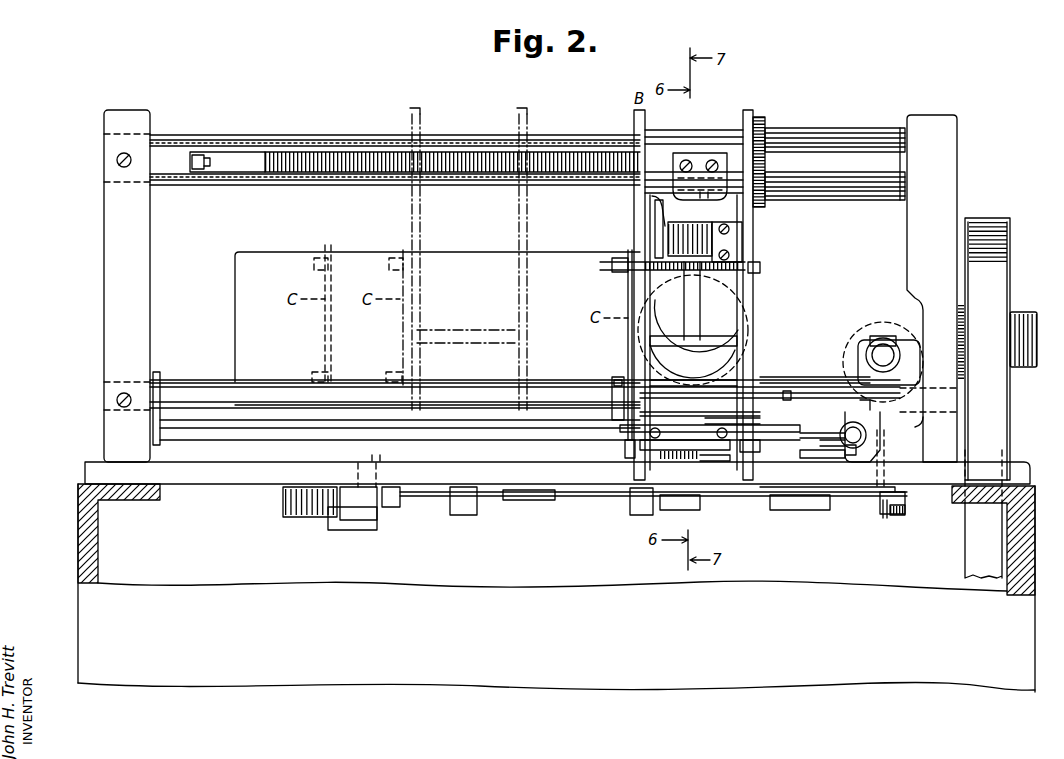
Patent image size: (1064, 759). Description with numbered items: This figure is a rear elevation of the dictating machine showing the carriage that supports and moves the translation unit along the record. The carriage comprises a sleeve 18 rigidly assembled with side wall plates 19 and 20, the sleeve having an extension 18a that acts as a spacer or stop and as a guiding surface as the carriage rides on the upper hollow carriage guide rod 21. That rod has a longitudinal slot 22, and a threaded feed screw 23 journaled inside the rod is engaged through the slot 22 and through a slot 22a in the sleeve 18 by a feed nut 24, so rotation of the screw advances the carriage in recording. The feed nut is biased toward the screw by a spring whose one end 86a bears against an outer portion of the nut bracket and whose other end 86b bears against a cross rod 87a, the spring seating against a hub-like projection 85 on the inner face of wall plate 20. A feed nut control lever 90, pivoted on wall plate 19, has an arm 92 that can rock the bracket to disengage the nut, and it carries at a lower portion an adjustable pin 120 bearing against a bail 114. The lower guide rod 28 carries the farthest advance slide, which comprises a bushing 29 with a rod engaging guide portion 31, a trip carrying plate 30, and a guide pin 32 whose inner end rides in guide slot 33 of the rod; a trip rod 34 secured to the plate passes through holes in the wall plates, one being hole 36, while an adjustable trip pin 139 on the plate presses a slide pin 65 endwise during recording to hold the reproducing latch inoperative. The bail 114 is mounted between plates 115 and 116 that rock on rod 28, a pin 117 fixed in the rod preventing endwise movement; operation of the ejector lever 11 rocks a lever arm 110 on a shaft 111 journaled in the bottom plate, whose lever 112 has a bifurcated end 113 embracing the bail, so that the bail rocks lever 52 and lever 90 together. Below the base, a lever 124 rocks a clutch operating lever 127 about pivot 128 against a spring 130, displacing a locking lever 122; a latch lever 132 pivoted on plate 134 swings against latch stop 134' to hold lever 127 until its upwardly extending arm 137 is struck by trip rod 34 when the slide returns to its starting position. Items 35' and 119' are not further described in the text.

The ejector lever 11 is at (394, 402).
The sleeve 18 is at (688, 135).
The sleeve extension 18a is at (846, 128).
The side wall plate 19 is at (742, 230).
The side wall plate 20 is at (635, 197).
The upper hollow carriage guide rod 21 is at (178, 135).
The longitudinal slot 22 is at (232, 152).
The slot 22a is at (672, 161).
The threaded feed screw 23 is at (330, 156).
The feed nut 24 is at (703, 160).
The lower guide rod 28 is at (196, 380).
The bushing 29 is at (612, 380).
The trip carrying plate 30 is at (632, 296).
The rod engaging guide portion 31 is at (640, 402).
The guide pin 32 is at (618, 378).
The guide slot 33 is at (264, 382).
The trip rod 34 is at (709, 418).
The lower actuating bar 35' is at (695, 445).
The hole 36 is at (748, 385).
The lever 52 is at (650, 211).
The slide pin 65 is at (762, 270).
The hub-like projection 85 is at (660, 226).
The spring end 86a is at (742, 245).
The spring end 86b is at (693, 361).
The cross rod 87a is at (742, 332).
The feed nut control lever 90 is at (752, 214).
The arm 92 is at (716, 196).
The lever arm 110 is at (556, 512).
The shaft 111 is at (625, 505).
The lever 112 is at (670, 452).
The bifurcated end 113 is at (748, 452).
The bail 114 is at (304, 430).
The plate 115 is at (155, 428).
The plate 116 is at (762, 382).
The pin 117 is at (790, 399).
The pawl block 119' is at (622, 463).
The adjustable pin 120 is at (714, 462).
The locking lever 122 is at (860, 505).
The lever 124 is at (835, 505).
The clutch operating lever 127 is at (882, 520).
The pivot 128 is at (882, 444).
The spring 130 is at (895, 514).
The latch lever 132 is at (858, 462).
The plate 134 is at (821, 450).
The latch stop 134' is at (876, 450).
The upwardly extending arm 137 is at (893, 429).
The trip pin 139 is at (613, 258).